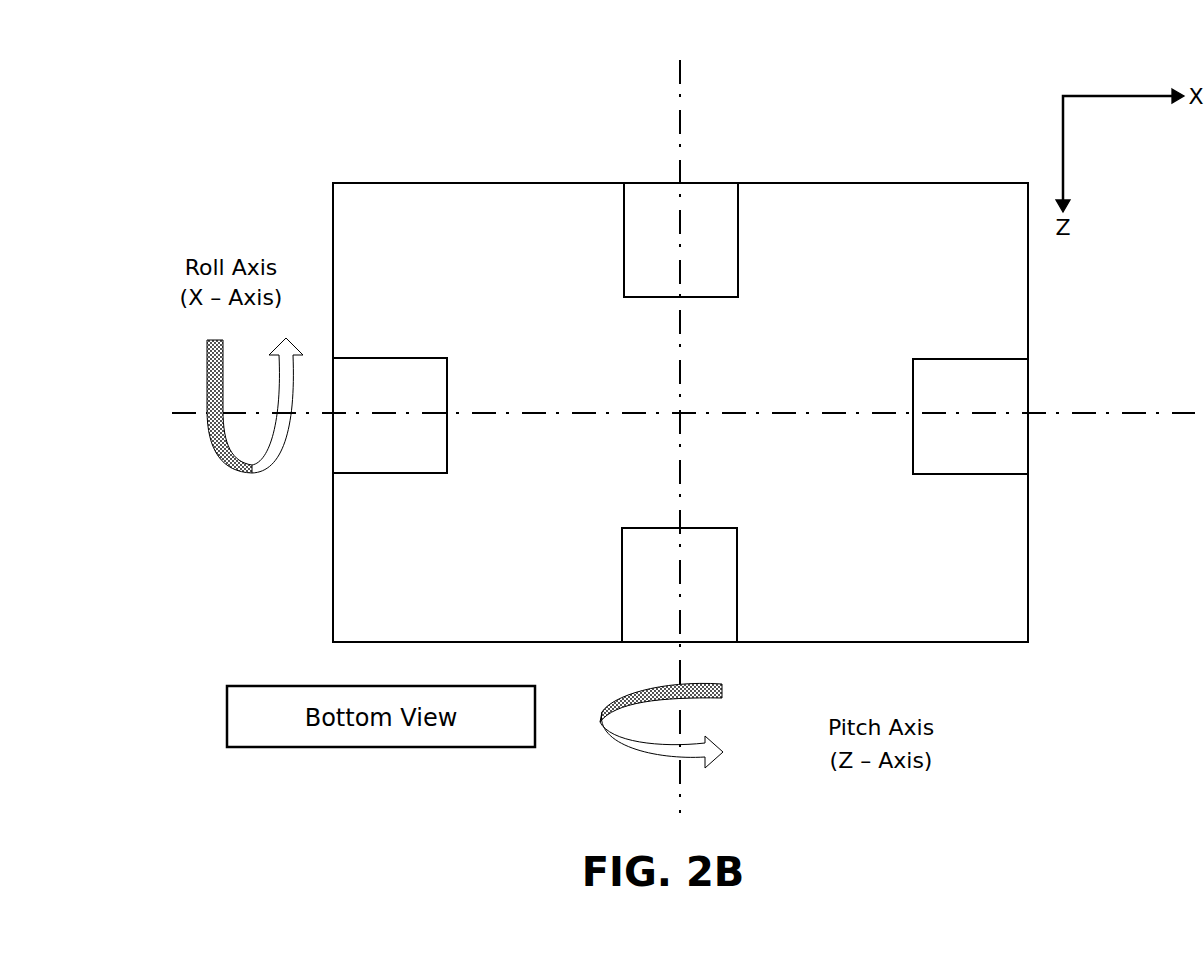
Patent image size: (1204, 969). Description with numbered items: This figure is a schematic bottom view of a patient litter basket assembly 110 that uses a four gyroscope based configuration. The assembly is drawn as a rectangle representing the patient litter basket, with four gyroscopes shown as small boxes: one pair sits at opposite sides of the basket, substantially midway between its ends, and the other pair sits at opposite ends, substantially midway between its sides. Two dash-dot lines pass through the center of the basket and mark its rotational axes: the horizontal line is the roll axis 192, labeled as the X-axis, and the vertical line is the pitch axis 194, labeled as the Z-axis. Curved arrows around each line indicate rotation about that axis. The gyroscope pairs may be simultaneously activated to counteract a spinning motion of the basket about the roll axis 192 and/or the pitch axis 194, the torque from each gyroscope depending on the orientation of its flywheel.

The patient litter basket assembly 110 is at (240, 110).
The roll axis 192 is at (851, 412).
The pitch axis 194 is at (673, 136).